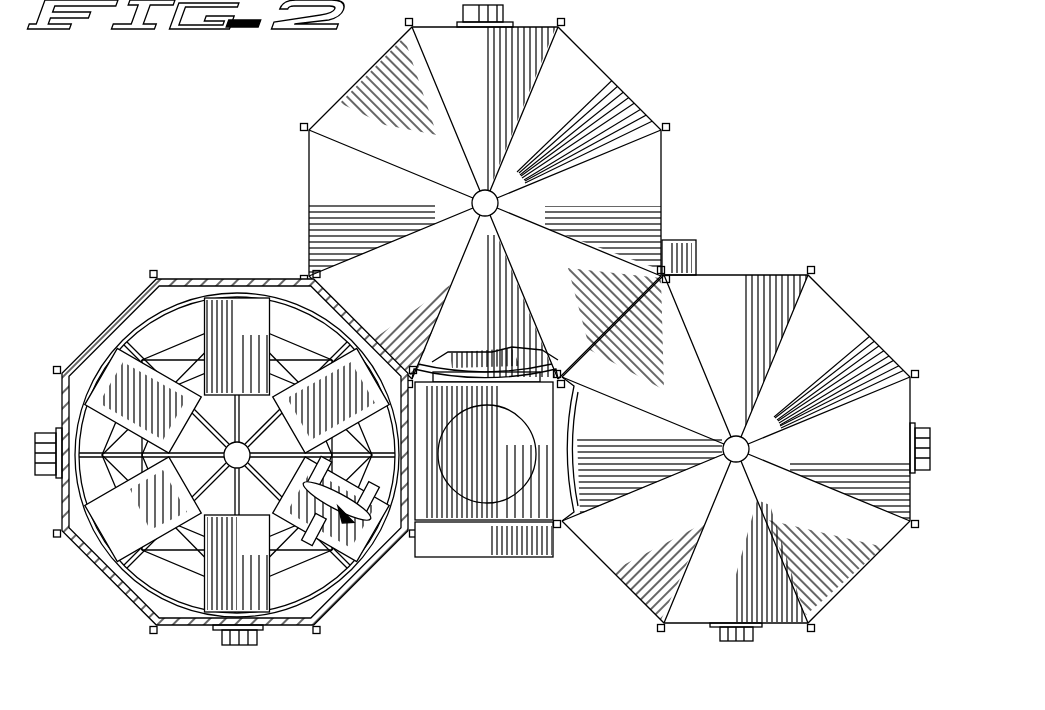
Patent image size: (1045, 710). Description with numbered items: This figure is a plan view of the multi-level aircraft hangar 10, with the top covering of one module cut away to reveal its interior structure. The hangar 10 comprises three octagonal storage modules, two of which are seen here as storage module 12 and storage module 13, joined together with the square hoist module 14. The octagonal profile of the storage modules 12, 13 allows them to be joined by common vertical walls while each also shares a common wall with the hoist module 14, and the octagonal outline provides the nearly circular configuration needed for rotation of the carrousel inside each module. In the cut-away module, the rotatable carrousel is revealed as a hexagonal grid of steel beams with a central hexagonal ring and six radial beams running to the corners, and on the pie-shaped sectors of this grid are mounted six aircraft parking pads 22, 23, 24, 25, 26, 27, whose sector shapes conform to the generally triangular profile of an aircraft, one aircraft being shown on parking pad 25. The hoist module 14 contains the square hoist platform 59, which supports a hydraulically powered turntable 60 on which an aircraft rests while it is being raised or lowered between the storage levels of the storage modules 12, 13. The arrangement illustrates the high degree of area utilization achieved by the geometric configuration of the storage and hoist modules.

The multi-level aircraft hangar 10 is at (850, 76).
The storage module 12 is at (331, 100).
The storage module 13 is at (862, 318).
The hoist module 14 is at (102, 320).
The aircraft parking pad 22 is at (154, 404).
The aircraft parking pad 23 is at (251, 356).
The aircraft parking pad 24 is at (338, 406).
The aircraft parking pad 25 is at (291, 499).
The aircraft parking pad 26 is at (248, 576).
The aircraft parking pad 27 is at (154, 524).
The hoist platform 59 is at (446, 514).
The hydraulically powered turntable 60 is at (501, 464).